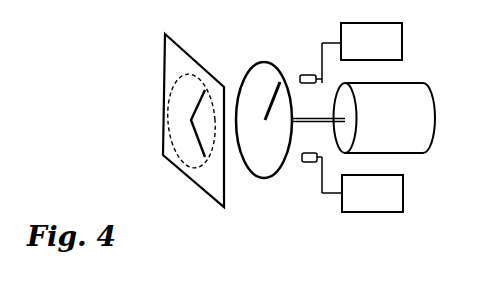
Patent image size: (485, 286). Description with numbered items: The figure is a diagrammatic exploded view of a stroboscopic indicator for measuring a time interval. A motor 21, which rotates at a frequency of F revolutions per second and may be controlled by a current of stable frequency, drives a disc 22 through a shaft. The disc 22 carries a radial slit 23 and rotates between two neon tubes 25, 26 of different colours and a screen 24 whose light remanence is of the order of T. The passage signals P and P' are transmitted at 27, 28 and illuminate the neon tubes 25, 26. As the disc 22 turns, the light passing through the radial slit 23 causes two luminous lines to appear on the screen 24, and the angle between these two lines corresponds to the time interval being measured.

The motor 21 is at (416, 150).
The disc 22 is at (273, 165).
The radial slit 23 is at (275, 100).
The screen 24 is at (212, 183).
The neon tube 25 is at (307, 75).
The neon tube 26 is at (313, 163).
The passage signal P input 27 is at (382, 22).
The passage signal P' input 28 is at (380, 214).